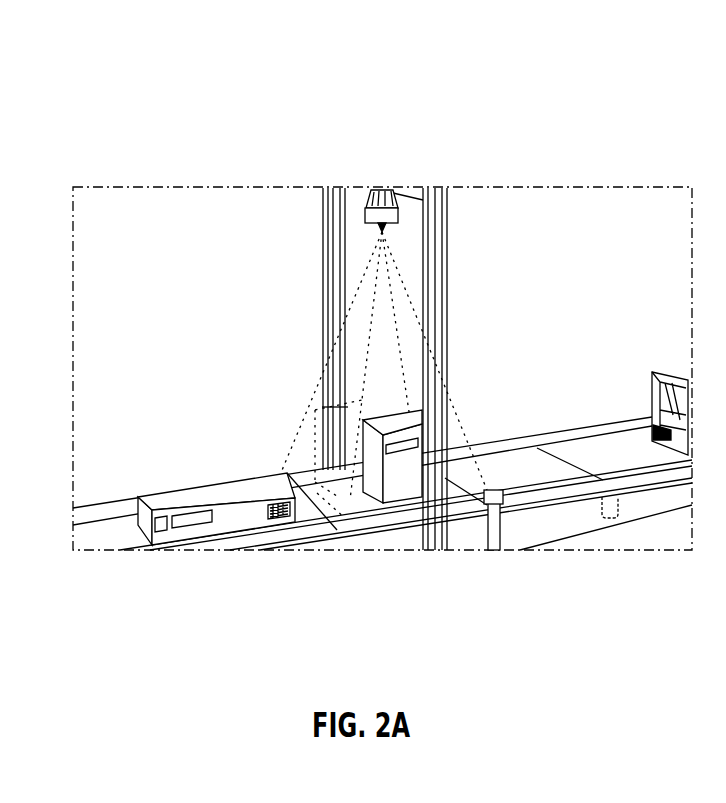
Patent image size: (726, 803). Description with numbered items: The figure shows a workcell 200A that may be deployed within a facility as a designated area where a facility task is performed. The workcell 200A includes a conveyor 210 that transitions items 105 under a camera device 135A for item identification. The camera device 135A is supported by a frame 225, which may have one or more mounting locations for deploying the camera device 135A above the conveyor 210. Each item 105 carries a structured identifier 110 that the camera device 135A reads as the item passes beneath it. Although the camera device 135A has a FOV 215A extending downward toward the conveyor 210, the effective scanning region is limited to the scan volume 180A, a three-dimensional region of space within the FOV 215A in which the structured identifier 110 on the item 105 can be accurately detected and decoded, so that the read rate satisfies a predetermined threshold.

The workcell 200A is at (170, 109).
The camera device 135A is at (363, 215).
The frame 225 is at (437, 212).
The scan volume 180A is at (378, 398).
The FOV 215A is at (307, 461).
The conveyor 210 is at (568, 434).
The item 105 is at (202, 520).
The structured identifier 110 is at (266, 512).